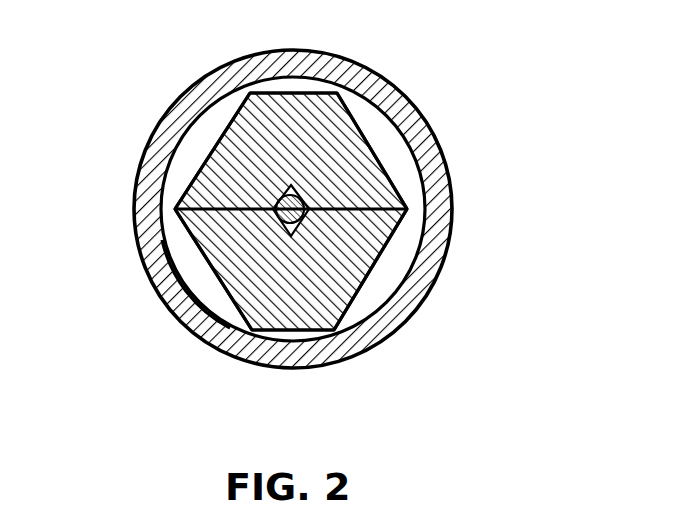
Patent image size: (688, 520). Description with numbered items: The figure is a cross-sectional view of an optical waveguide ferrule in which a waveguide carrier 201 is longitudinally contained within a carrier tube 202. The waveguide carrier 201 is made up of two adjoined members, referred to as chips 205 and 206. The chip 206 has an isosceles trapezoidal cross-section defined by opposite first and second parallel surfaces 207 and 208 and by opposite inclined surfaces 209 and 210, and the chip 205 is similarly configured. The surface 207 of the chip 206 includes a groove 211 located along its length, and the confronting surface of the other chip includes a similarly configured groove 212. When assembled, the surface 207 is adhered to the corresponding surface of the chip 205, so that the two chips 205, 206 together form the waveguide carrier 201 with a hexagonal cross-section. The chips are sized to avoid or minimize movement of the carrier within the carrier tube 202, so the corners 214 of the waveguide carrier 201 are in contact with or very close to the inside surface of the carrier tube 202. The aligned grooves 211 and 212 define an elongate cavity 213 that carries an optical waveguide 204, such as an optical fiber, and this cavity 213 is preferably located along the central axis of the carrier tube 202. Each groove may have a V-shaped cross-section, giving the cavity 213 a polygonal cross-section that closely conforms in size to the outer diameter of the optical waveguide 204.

The waveguide carrier 201 is at (200, 165).
The carrier tube 202 is at (420, 113).
The optical waveguide 204 is at (223, 227).
The chip 205 is at (383, 183).
The chip 206 is at (363, 215).
The first parallel surface 207 is at (275, 211).
The second parallel surface 208 is at (297, 332).
The inclined surface 209 is at (363, 265).
The inclined surface 210 is at (187, 323).
The groove 211 is at (294, 238).
The groove 212 is at (293, 196).
The elongate cavity 213 is at (267, 168).
The corners 214 is at (337, 90).